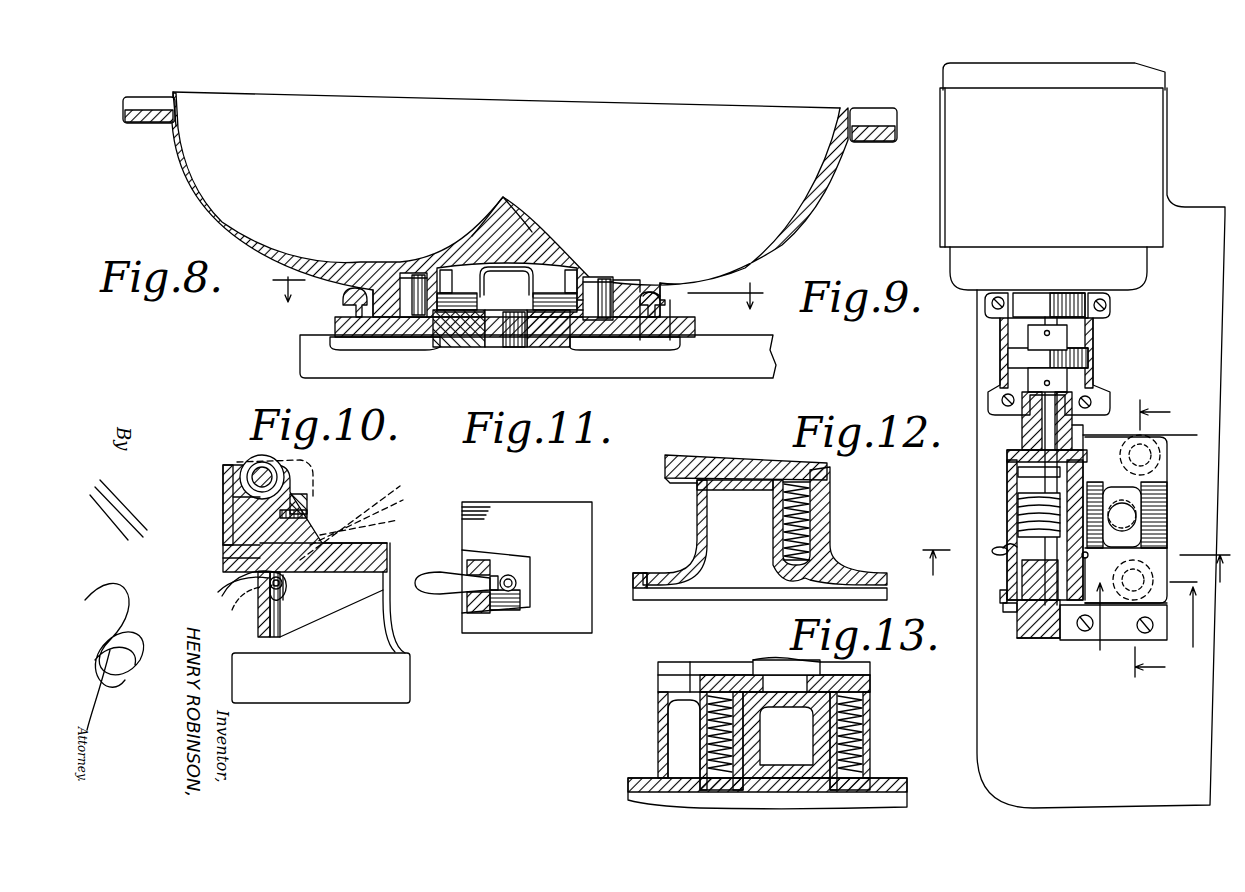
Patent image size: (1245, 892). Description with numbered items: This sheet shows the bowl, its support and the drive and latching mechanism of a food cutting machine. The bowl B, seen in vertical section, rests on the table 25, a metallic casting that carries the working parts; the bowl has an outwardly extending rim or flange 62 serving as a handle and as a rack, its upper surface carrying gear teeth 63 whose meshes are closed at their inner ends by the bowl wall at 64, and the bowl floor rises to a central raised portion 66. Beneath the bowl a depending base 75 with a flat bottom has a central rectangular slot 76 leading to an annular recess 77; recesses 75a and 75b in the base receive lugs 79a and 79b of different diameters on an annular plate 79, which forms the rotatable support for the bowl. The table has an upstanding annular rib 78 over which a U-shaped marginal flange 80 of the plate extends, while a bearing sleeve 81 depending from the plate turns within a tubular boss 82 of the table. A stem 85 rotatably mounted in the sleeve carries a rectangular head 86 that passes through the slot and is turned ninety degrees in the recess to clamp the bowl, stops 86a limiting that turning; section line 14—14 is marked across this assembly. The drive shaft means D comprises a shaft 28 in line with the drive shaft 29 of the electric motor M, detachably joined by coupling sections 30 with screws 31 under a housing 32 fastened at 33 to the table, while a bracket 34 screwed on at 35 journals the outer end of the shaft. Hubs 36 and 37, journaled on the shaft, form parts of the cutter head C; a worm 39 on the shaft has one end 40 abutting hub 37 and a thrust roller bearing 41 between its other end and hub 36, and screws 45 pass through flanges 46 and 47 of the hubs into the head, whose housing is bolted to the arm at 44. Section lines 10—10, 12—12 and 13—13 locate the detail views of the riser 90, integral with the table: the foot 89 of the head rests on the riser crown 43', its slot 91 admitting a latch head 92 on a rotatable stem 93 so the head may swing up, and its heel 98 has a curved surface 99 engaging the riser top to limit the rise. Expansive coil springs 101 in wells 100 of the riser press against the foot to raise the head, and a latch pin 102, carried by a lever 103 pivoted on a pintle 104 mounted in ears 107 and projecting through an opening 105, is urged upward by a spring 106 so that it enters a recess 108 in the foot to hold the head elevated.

In FIG. 9, the section line 10— 10 is at (1078, 568).
In FIG. 9, the section line 12— 12 is at (1144, 628).
In FIG. 9, the section line 13— 13 is at (1162, 539).
In FIG. 8, the section line 14— 14 is at (518, 301).
In FIG. 8, the table 25 is at (538, 356).
In FIG. 9, the table 25 is at (1191, 327).
In FIG. 10, the table 25 is at (327, 700).
In FIG. 12, the table 25 is at (657, 590).
In FIG. 13, the table 25 is at (636, 784).
In FIG. 9, the shaft 28 is at (1070, 418).
In FIG. 10, the shaft 28 is at (288, 478).
In FIG. 9, the motor drive shaft 29 is at (1087, 322).
In FIG. 9, the coupling sections 30 is at (1092, 363).
In FIG. 9, the screws 31 is at (1093, 347).
In FIG. 9, the housing 32 is at (1000, 370).
In FIG. 9, the screws 33 is at (994, 306).
In FIG. 9, the bracket 34 is at (1018, 640).
In FIG. 9, the screws 35 is at (1094, 632).
In FIG. 9, the hub 36 is at (1008, 452).
In FIG. 9, the hub 37 is at (1027, 571).
In FIG. 9, the worm 39 is at (1020, 513).
In FIG. 10, the worm 39 is at (226, 493).
In FIG. 9, the worm end 40 is at (995, 549).
In FIG. 9, the thrust roller bearing 41 is at (1017, 472).
In FIG. 10, the crown of riser 43' is at (337, 533).
In FIG. 12, the crown of riser 43' is at (735, 503).
In FIG. 10, the bolts 44 is at (304, 508).
In FIG. 9, the screws 45 is at (1000, 603).
In FIG. 9, the flange 46 is at (1090, 436).
In FIG. 9, the flange 47 is at (1010, 605).
In FIG. 8, the rim or flange 62 is at (160, 125).
In FIG. 8, the gear teeth 63 is at (139, 98).
In FIG. 8, the inner ends of meshes 64 is at (178, 94).
In FIG. 8, the central raised portion 66 is at (504, 202).
In FIG. 8, the base 75 is at (390, 280).
In FIG. 8, the recess 75a is at (383, 337).
In FIG. 8, the recess 75b is at (648, 338).
In FIG. 8, the slot 76 is at (450, 266).
In FIG. 8, the annular recess 77 is at (588, 282).
In FIG. 8, the annular rib 78 is at (666, 318).
In FIG. 8, the annular plate 79 is at (583, 313).
In FIG. 8, the lug 79a is at (410, 275).
In FIG. 8, the lug 79b is at (636, 280).
In FIG. 8, the marginal flange 80 is at (664, 298).
In FIG. 8, the bearing sleeve 81 is at (548, 345).
In FIG. 8, the tubular boss 82 is at (463, 343).
In FIG. 8, the stem 85 is at (500, 327).
In FIG. 8, the rectangular head 86 is at (515, 276).
In FIG. 8, the stops 86a is at (470, 283).
In FIG. 9, the foot 89 is at (1167, 573).
In FIG. 10, the foot 89 is at (268, 528).
In FIG. 12, the foot 89 is at (757, 460).
In FIG. 13, the foot 89 is at (870, 685).
In FIG. 9, the riser 90 is at (1168, 476).
In FIG. 10, the riser 90 is at (390, 612).
In FIG. 11, the riser 90 is at (592, 570).
In FIG. 12, the riser 90 is at (828, 498).
In FIG. 9, the slot 91 is at (1165, 500).
In FIG. 13, the slot 91 is at (774, 680).
In FIG. 9, the latch head 92 is at (1165, 517).
In FIG. 9, the stem 93 is at (1165, 530).
In FIG. 10, the heel 98 is at (245, 542).
In FIG. 10, the curved surface 99 is at (265, 554).
In FIG. 12, the curved surface 99 is at (672, 479).
In FIG. 12, the wells 100 is at (815, 540).
In FIG. 13, the wells 100 is at (703, 735).
In FIG. 12, the coil springs 101 is at (807, 522).
In FIG. 13, the coil springs 101 is at (832, 758).
In FIG. 9, the latch pin 102 is at (1080, 608).
In FIG. 10, the latch pin 102 is at (303, 588).
In FIG. 11, the latch pin 102 is at (517, 583).
In FIG. 9, the lever 103 is at (1007, 547).
In FIG. 10, the lever 103 is at (262, 580).
In FIG. 10, the pintle 104 is at (280, 637).
In FIG. 10, the opening 105 is at (258, 588).
In FIG. 11, the opening 105 is at (463, 573).
In FIG. 10, the spring 106 is at (300, 599).
In FIG. 11, the spring 106 is at (503, 592).
In FIG. 11, the ears 107 is at (488, 568).
In FIG. 10, the recess 108 is at (377, 494).
In FIG. 8, the bowl B is at (510, 204).
In FIG. 9, the cutter head C is at (996, 500).
In FIG. 9, the drive shaft means D is at (1010, 383).
In FIG. 9, the electric motor M is at (1082, 435).